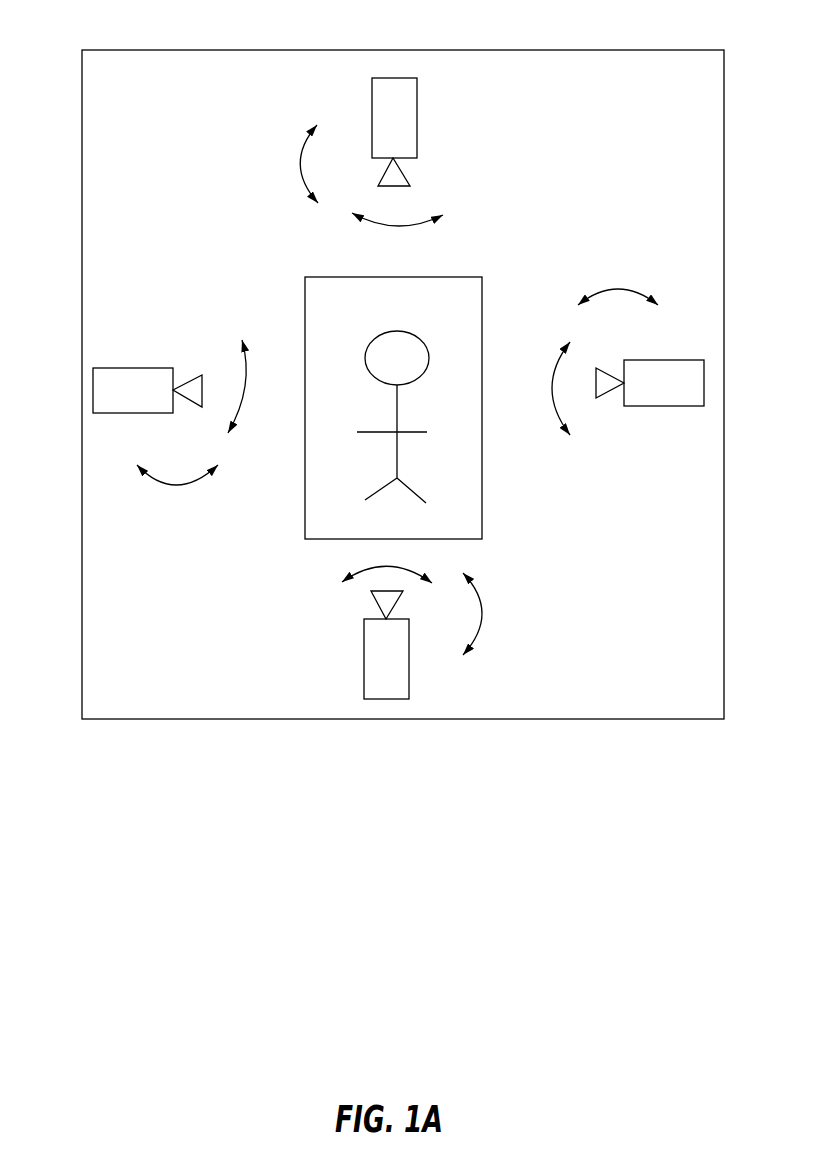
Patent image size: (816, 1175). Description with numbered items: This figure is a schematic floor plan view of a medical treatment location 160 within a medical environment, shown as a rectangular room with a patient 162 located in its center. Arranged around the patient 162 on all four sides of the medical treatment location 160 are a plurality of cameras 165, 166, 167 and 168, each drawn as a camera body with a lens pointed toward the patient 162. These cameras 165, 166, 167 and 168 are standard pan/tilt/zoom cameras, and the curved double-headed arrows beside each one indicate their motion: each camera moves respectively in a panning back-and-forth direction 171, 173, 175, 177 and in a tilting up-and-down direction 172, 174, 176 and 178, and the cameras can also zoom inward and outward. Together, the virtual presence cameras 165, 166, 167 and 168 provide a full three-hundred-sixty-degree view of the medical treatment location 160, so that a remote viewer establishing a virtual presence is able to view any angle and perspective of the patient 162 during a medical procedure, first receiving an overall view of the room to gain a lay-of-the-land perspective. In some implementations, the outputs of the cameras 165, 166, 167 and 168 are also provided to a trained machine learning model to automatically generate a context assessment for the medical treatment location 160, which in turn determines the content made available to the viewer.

The medical treatment location 160 is at (648, 50).
The patient 162 is at (378, 328).
The camera 165 is at (417, 108).
The camera 166 is at (698, 360).
The camera 167 is at (364, 687).
The camera 168 is at (95, 385).
The panning back-and-forth direction 171 is at (445, 214).
The tilting up-and-down direction 172 is at (300, 165).
The panning back-and-forth direction 173 is at (556, 369).
The tilting up-and-down direction 174 is at (618, 289).
The panning back-and-forth direction 175 is at (340, 583).
The tilting up-and-down direction 176 is at (481, 613).
The panning back-and-forth direction 177 is at (232, 352).
The tilting up-and-down direction 178 is at (173, 483).